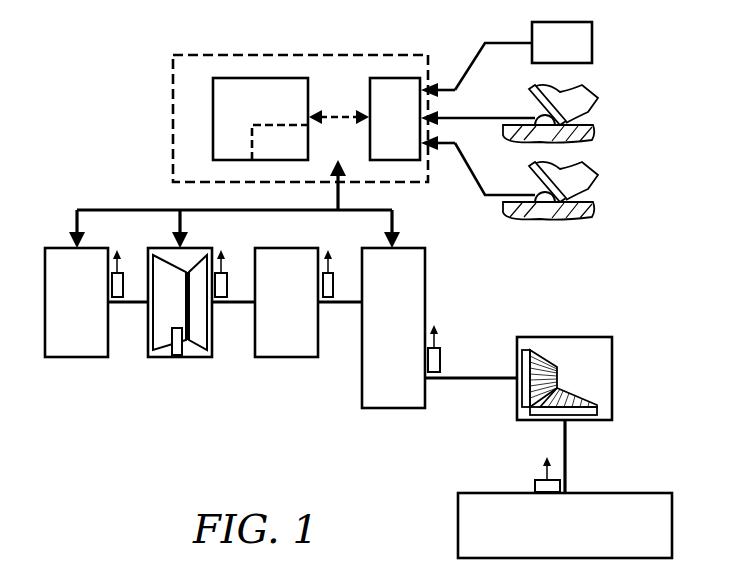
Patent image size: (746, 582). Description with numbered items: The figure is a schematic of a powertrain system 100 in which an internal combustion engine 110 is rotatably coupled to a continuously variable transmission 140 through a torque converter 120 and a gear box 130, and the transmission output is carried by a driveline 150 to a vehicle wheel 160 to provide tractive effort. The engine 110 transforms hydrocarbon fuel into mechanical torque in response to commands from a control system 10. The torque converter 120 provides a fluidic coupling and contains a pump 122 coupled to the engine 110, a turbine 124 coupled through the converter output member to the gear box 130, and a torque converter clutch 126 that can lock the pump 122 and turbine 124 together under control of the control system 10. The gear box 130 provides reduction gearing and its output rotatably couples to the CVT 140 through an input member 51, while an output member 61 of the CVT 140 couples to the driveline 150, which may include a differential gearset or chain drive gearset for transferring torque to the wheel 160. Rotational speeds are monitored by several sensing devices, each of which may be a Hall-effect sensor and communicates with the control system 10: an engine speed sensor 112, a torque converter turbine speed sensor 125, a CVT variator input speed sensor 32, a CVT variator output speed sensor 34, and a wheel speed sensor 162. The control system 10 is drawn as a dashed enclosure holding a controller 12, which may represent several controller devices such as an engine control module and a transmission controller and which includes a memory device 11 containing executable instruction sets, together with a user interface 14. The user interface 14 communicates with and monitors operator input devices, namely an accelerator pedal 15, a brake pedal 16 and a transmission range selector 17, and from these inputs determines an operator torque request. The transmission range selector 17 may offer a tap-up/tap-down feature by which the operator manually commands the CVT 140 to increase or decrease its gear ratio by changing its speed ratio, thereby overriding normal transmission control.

The powertrain system 100 is at (117, 112).
The control system 10 is at (182, 85).
The memory device 11 is at (269, 153).
The controller 12 is at (226, 108).
The user interface 14 is at (384, 129).
The accelerator pedal 15 is at (532, 193).
The brake pedal 16 is at (532, 116).
The transmission range selector 17 is at (551, 53).
The CVT variator input speed sensor 32 is at (334, 287).
The CVT variator output speed sensor 34 is at (442, 362).
The input member 51 is at (352, 305).
The output member 61 is at (472, 382).
The internal combustion engine 110 is at (59, 313).
The engine speed sensor 112 is at (125, 287).
The torque converter 120 is at (155, 360).
The pump 122 is at (167, 358).
The turbine 124 is at (198, 358).
The torque converter turbine speed sensor 125 is at (229, 287).
The torque converter clutch 126 is at (180, 358).
The gear box 130 is at (270, 313).
The continuously variable transmission 140 is at (377, 339).
The driveline 150 is at (565, 369).
The vehicle wheel 160 is at (545, 536).
The wheel speed sensor 162 is at (535, 487).